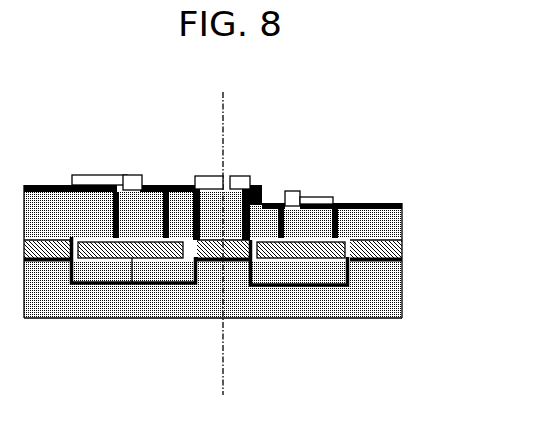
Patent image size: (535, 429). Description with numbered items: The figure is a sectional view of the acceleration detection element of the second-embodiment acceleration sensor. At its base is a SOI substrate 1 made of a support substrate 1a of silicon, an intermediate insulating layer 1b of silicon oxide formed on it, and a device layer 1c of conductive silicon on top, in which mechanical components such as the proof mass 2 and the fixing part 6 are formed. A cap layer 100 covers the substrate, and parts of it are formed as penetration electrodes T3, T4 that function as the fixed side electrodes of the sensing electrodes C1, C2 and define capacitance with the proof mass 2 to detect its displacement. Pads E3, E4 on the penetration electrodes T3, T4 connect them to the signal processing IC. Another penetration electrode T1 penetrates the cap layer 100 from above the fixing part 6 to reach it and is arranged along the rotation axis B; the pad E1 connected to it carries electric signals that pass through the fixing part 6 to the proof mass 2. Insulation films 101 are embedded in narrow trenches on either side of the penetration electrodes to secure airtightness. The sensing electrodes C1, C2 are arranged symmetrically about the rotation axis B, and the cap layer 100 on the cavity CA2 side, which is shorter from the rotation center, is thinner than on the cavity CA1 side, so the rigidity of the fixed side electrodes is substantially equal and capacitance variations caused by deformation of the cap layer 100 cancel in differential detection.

The SOI substrate 1 is at (275, 288).
The support substrate 1a is at (403, 308).
The intermediate insulating layer 1b is at (403, 272).
The device layer 1c is at (253, 257).
The proof mass 2 is at (132, 284).
The fixing part 6 is at (217, 318).
The cap layer 100 is at (403, 215).
The insulation films 101 is at (403, 203).
The rotation axis B is at (233, 243).
The sensing electrode C1 is at (121, 233).
The sensing electrode C2 is at (323, 235).
The pad E1 is at (195, 178).
The pad E3 is at (87, 175).
The pad E4 is at (318, 197).
The penetration electrode T1 is at (238, 176).
The penetration electrode T3 is at (124, 175).
The penetration electrode T4 is at (296, 195).
The cavity CA1 is at (98, 273).
The cavity CA2 is at (326, 268).